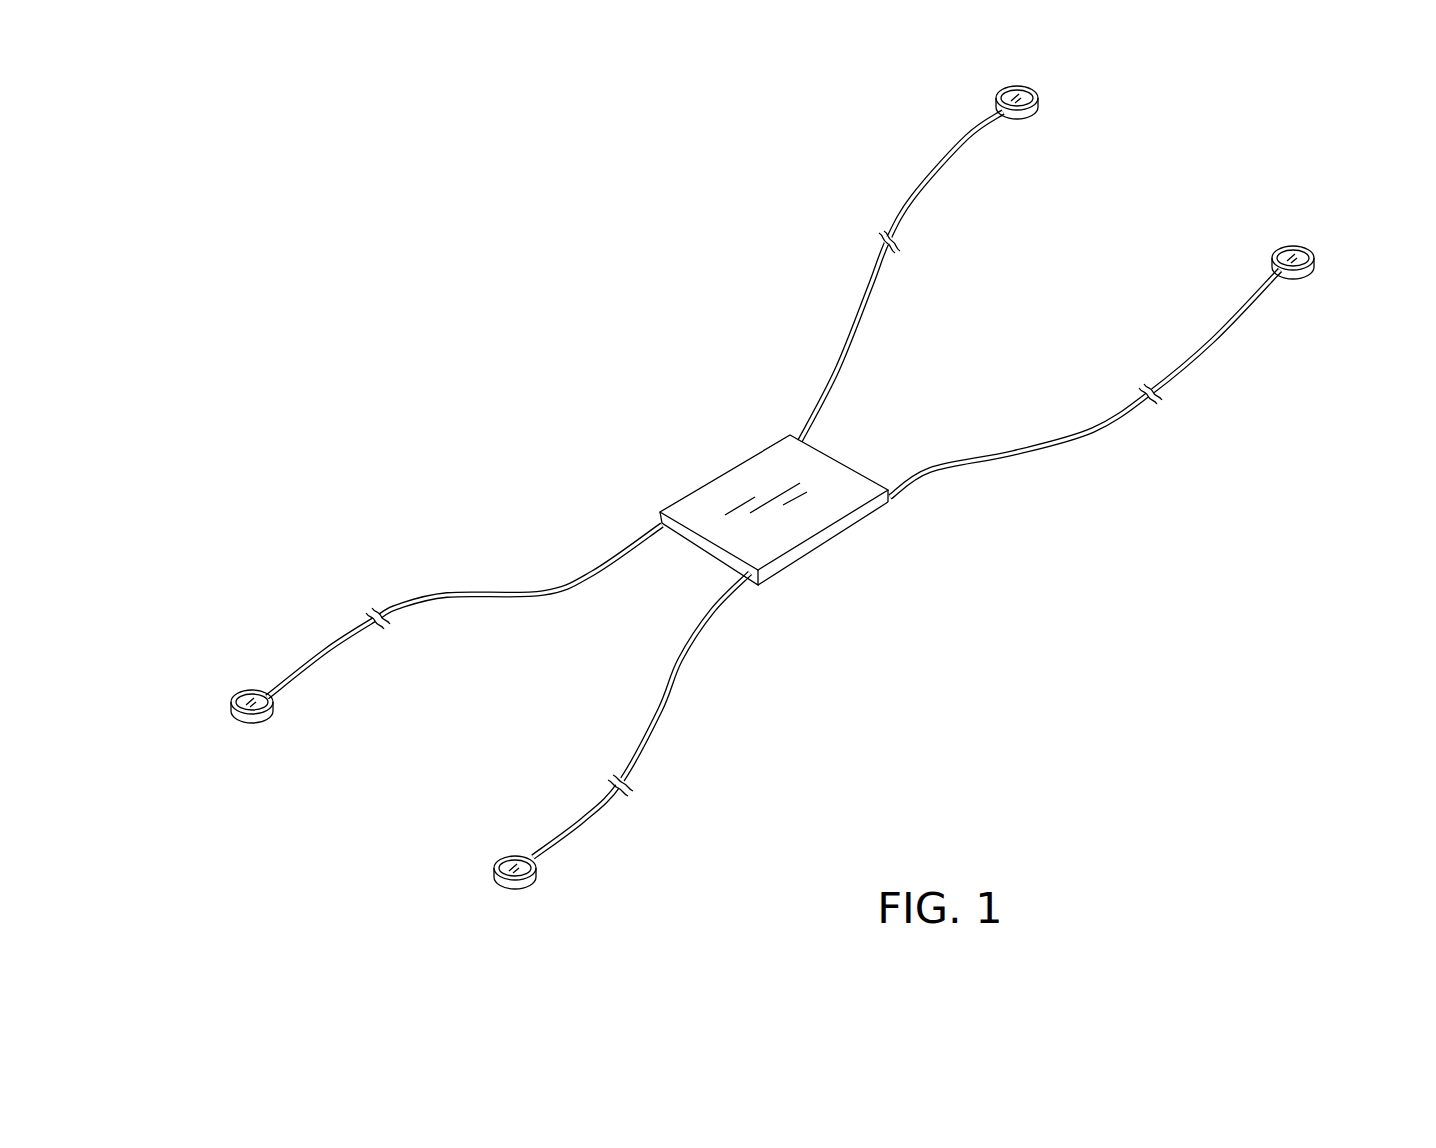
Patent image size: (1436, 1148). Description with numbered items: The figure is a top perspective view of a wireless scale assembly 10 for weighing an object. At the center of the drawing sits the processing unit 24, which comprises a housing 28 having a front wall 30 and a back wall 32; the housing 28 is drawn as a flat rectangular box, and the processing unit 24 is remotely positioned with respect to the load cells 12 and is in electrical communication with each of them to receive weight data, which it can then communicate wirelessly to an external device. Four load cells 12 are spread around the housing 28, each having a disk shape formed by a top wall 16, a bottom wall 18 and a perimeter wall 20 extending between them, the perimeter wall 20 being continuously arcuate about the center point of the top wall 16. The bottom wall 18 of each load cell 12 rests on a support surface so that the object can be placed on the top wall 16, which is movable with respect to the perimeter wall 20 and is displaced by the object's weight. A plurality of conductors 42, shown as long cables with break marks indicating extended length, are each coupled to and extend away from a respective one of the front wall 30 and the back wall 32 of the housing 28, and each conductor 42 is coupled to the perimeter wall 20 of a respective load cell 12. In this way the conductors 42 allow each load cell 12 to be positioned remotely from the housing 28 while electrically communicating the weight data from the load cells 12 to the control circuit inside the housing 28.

The wireless scale assembly 10 is at (530, 338).
The load cell 12 is at (783, 502).
The top wall 16 is at (1010, 90).
The bottom wall 18 is at (1015, 120).
The perimeter wall 20 is at (1038, 107).
The processing unit 24 is at (765, 500).
The housing 28 is at (820, 553).
The front wall 30 is at (849, 458).
The back wall 32 is at (693, 562).
The conductor 42 is at (915, 190).